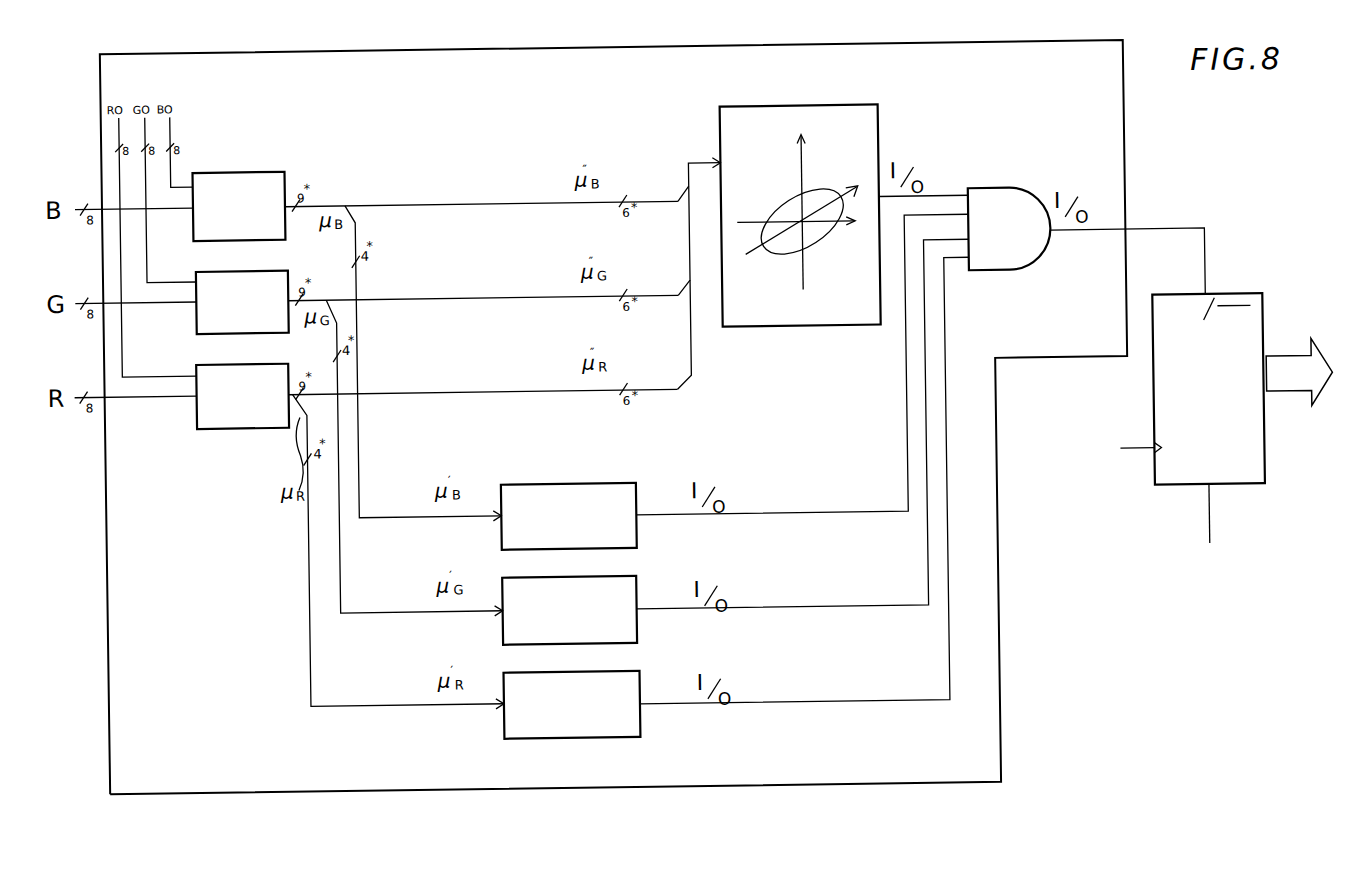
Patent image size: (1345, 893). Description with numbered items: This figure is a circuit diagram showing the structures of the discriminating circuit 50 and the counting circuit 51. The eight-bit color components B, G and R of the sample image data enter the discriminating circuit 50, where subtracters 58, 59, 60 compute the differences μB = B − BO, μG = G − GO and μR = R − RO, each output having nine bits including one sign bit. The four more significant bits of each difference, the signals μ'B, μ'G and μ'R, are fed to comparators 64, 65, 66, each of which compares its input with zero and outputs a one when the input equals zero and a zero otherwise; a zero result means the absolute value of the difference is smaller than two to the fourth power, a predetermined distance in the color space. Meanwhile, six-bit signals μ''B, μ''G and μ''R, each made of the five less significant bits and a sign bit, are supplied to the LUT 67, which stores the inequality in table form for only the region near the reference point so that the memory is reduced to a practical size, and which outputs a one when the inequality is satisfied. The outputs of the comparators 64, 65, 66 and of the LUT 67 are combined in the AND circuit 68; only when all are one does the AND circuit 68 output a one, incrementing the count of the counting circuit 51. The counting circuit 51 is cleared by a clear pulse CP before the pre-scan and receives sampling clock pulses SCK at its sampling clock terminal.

The discriminating circuit 50 is at (665, 786).
The counting circuit 51 is at (1232, 301).
The subtracter 58 is at (266, 166).
The subtracter 59 is at (198, 316).
The subtracter 60 is at (238, 422).
The comparator 64 is at (616, 482).
The comparator 65 is at (625, 577).
The comparator 66 is at (633, 672).
The LUT 67 is at (864, 108).
The AND circuit 68 is at (998, 192).